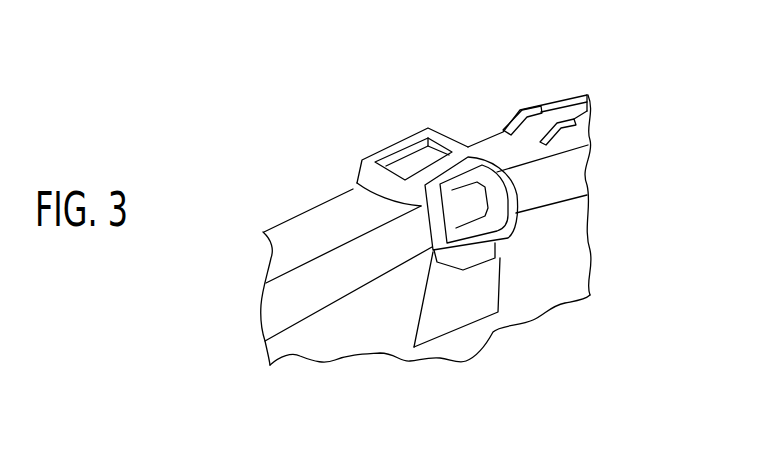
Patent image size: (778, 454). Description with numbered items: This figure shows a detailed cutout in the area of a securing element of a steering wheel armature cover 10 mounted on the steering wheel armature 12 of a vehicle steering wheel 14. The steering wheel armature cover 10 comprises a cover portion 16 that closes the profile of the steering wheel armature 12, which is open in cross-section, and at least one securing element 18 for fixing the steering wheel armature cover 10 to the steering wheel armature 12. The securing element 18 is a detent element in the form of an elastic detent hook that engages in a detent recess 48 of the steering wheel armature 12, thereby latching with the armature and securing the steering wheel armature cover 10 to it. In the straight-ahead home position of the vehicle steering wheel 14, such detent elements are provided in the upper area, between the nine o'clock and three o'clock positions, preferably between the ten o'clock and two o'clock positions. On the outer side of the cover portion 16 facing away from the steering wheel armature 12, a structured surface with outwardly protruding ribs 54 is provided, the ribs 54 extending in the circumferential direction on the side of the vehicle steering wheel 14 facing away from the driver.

The steering wheel armature cover 10 is at (462, 108).
The steering wheel armature 12 is at (340, 335).
The vehicle steering wheel 14 is at (640, 93).
The cover portion 16 is at (322, 212).
The securing element 18 is at (513, 230).
The detent recess 48 is at (466, 284).
The ribs 54 is at (563, 107).